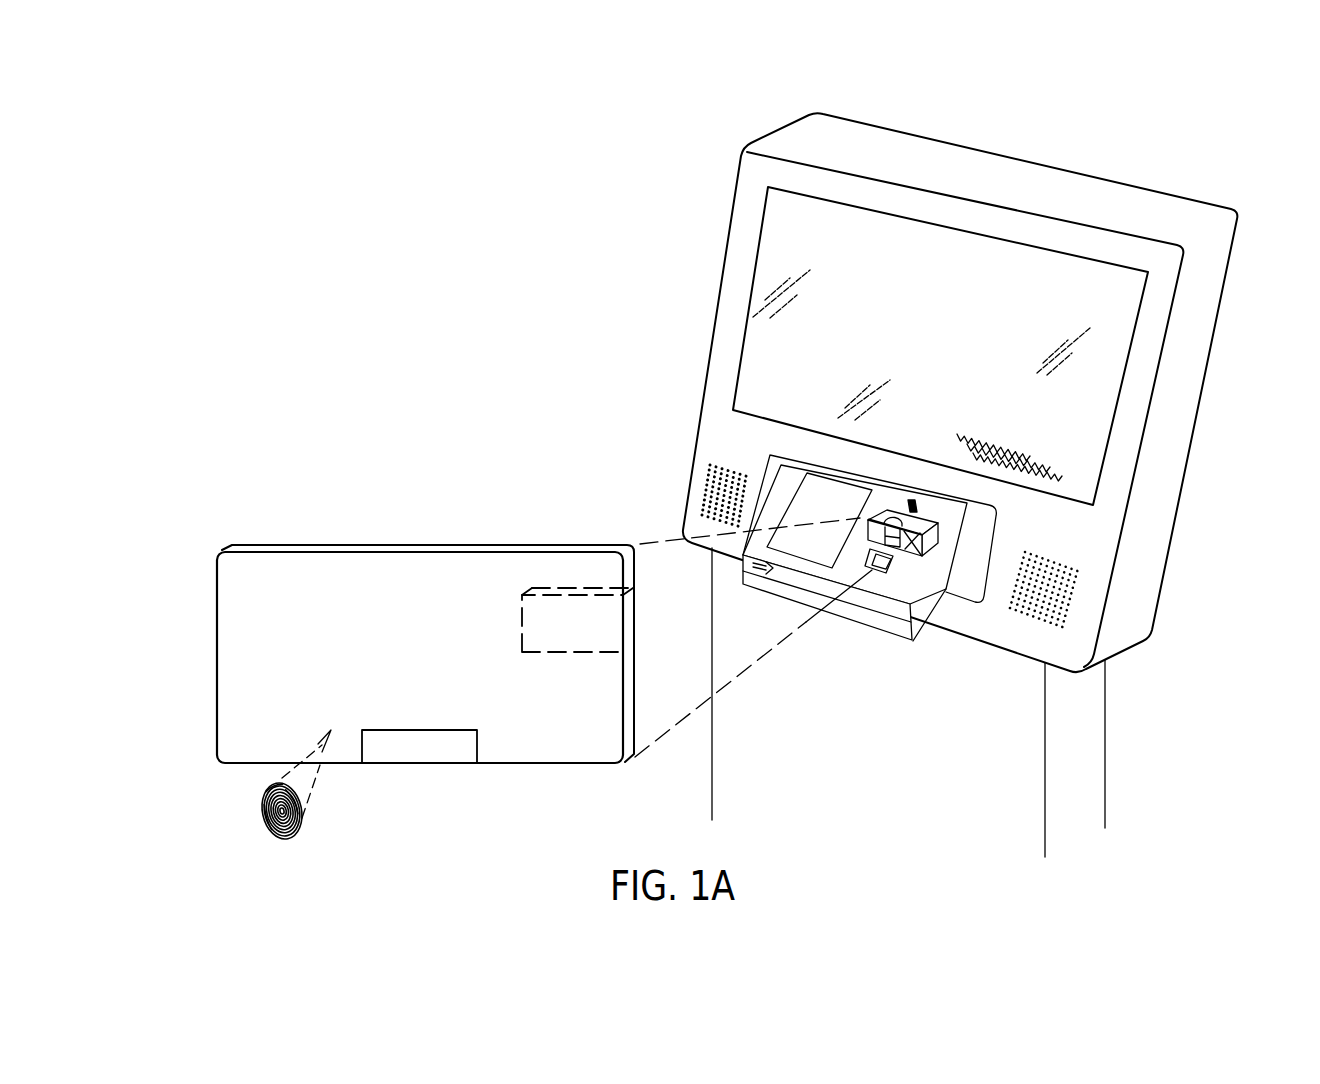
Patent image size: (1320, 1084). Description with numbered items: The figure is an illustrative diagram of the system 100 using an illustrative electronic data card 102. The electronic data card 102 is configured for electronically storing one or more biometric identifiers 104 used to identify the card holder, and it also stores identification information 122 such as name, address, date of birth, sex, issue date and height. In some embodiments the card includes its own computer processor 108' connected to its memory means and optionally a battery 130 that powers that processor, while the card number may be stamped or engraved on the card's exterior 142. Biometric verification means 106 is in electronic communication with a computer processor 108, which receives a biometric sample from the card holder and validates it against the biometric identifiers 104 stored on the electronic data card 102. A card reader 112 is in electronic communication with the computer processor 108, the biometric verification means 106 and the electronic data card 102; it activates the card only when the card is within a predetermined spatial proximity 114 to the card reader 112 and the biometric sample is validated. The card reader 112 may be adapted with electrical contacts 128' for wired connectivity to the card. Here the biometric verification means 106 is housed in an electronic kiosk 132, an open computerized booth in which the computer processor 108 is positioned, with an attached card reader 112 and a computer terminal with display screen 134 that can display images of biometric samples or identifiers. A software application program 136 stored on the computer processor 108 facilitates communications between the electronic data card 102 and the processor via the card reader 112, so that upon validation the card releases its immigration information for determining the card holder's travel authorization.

The system 100 is at (532, 406).
The electronic data card 102 is at (253, 506).
The biometric identifier 104 is at (243, 798).
The biometric verification means 106 is at (806, 497).
The computer processor 108 is at (922, 392).
The computer processor 108' is at (428, 618).
The card reader 112 is at (889, 512).
The predetermined spatial proximity 114 is at (770, 650).
The identification information 122 is at (470, 765).
The electrical contacts 128' is at (945, 649).
The battery 130 is at (634, 632).
The electronic kiosk 132 is at (728, 235).
The display screen 134 is at (947, 263).
The software application program 136 is at (1040, 440).
The card's exterior 142 is at (224, 679).